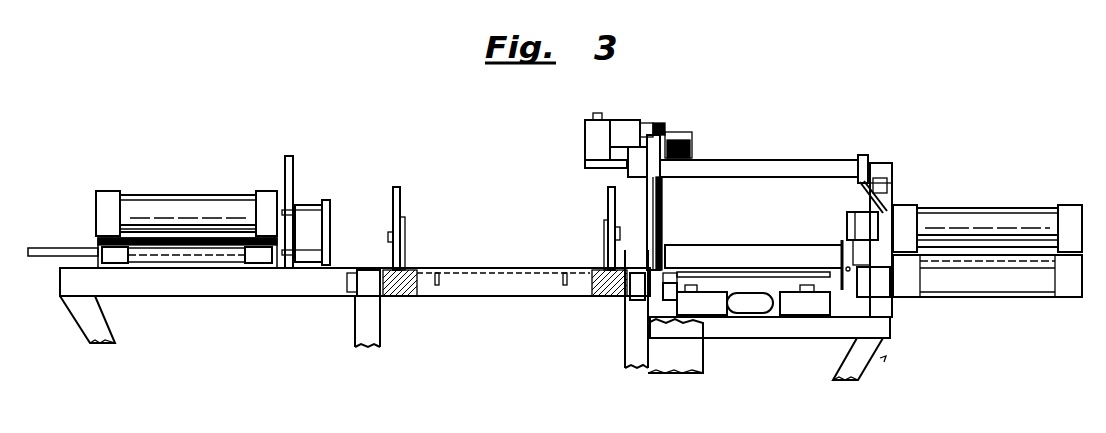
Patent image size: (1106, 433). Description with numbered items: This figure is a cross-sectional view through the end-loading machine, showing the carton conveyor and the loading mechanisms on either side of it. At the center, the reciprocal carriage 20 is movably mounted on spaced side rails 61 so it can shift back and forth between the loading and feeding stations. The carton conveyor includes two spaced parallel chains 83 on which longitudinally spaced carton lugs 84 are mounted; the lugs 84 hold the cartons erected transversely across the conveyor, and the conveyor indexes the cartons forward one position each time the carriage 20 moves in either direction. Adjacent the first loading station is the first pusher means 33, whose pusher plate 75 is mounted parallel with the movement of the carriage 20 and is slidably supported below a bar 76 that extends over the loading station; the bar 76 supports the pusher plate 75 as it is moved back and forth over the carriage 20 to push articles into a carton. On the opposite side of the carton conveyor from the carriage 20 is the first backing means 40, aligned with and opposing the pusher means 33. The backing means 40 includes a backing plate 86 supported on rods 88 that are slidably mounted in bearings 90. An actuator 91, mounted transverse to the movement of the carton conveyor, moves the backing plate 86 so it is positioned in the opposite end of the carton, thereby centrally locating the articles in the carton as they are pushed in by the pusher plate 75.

The carriage 20 is at (762, 272).
The first pusher means 33 is at (1013, 196).
The first backing means 40 is at (333, 223).
The side rails 61 is at (821, 303).
The pusher plate 75 is at (846, 220).
The bar 76 is at (770, 168).
The chains 83 is at (413, 292).
The carton lugs 84 is at (400, 238).
The backing plate 86 is at (331, 204).
The rods 88 is at (43, 251).
The bearings 90 is at (110, 252).
The actuator 91 is at (160, 205).